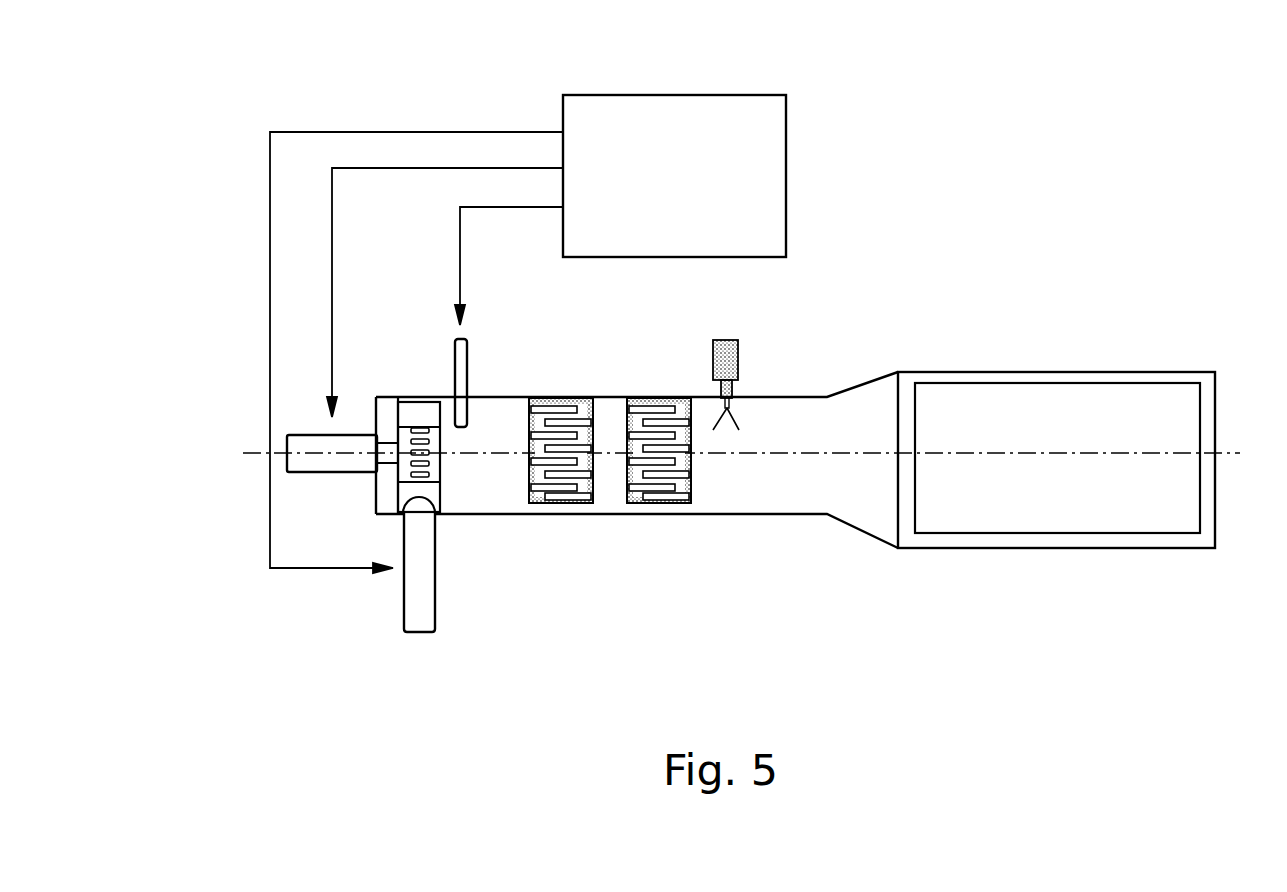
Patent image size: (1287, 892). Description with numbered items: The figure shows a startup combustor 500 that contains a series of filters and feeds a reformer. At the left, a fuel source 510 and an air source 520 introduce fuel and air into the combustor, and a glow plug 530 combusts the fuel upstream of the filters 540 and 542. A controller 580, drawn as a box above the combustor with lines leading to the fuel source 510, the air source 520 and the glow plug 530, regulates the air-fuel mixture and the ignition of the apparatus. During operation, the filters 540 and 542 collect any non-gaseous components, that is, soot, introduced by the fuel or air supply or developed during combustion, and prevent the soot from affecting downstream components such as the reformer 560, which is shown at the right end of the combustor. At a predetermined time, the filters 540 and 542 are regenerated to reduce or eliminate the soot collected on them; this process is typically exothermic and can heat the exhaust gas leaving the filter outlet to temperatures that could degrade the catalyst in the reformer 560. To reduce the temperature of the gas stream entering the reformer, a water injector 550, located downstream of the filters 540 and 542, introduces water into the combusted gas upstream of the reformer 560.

The startup combustor 500 is at (955, 187).
The fuel source 510 is at (245, 436).
The air source 520 is at (423, 635).
The glow plug 530 is at (475, 348).
The filter 540 is at (565, 518).
The filter 542 is at (665, 518).
The water injector 550 is at (733, 337).
The reformer 560 is at (1050, 368).
The controller 580 is at (715, 92).